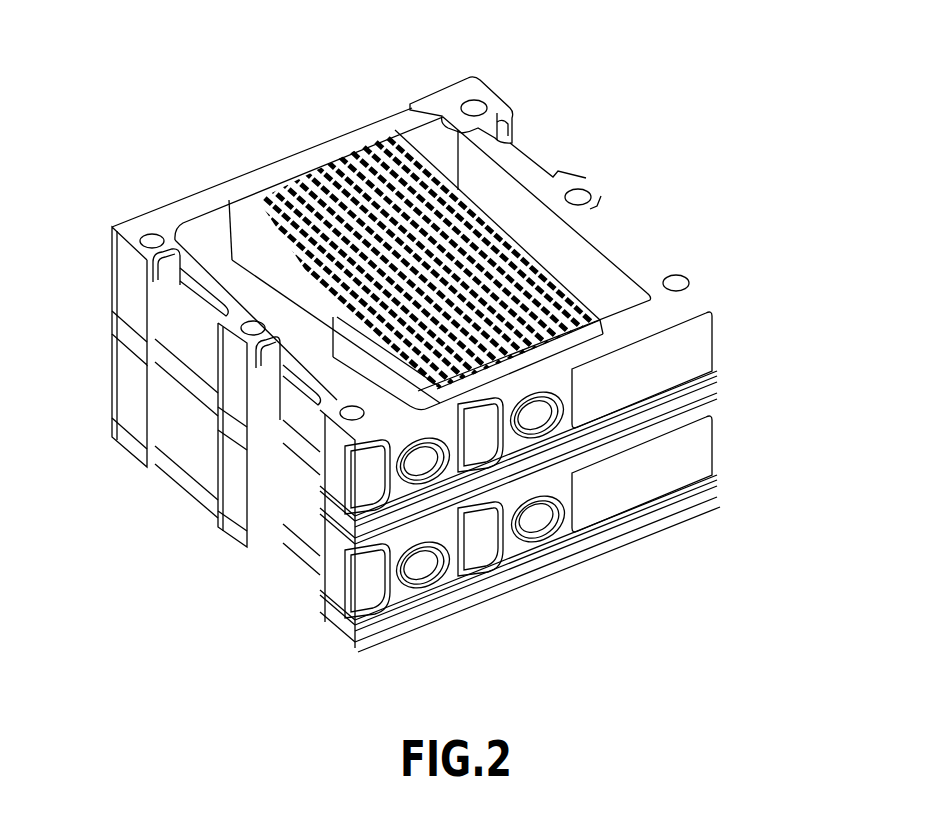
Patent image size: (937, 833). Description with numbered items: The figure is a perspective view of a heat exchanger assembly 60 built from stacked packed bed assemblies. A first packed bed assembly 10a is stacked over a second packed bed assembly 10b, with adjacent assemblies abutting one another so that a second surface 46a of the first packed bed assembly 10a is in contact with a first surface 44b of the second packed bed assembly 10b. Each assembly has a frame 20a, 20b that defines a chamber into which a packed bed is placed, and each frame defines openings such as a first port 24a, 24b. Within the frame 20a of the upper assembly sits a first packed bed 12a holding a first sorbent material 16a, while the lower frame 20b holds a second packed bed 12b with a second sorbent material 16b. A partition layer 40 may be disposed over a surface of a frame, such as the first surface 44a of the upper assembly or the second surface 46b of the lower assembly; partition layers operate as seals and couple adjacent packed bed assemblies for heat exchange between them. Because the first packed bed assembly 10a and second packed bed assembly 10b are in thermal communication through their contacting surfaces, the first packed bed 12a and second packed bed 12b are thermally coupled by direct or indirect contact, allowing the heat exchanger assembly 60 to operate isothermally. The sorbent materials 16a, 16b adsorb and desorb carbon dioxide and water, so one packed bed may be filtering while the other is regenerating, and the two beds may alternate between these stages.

The heat exchanger assembly 60 is at (89, 82).
The first packed bed 12a is at (280, 200).
The first sorbent material 16a is at (362, 180).
The partition layer 40 is at (478, 92).
The first surface 44a is at (126, 232).
The first surface 44b is at (118, 333).
The frame 20a is at (623, 250).
The frame 20b is at (678, 520).
The first packed bed assembly 10a is at (730, 293).
The second packed bed assembly 10b is at (730, 397).
The second surface 46a is at (323, 520).
The second surface 46b is at (330, 630).
The first port 24a is at (437, 476).
The first port 24b is at (422, 580).
The second packed bed 12b is at (545, 532).
The second sorbent material 16b is at (536, 518).